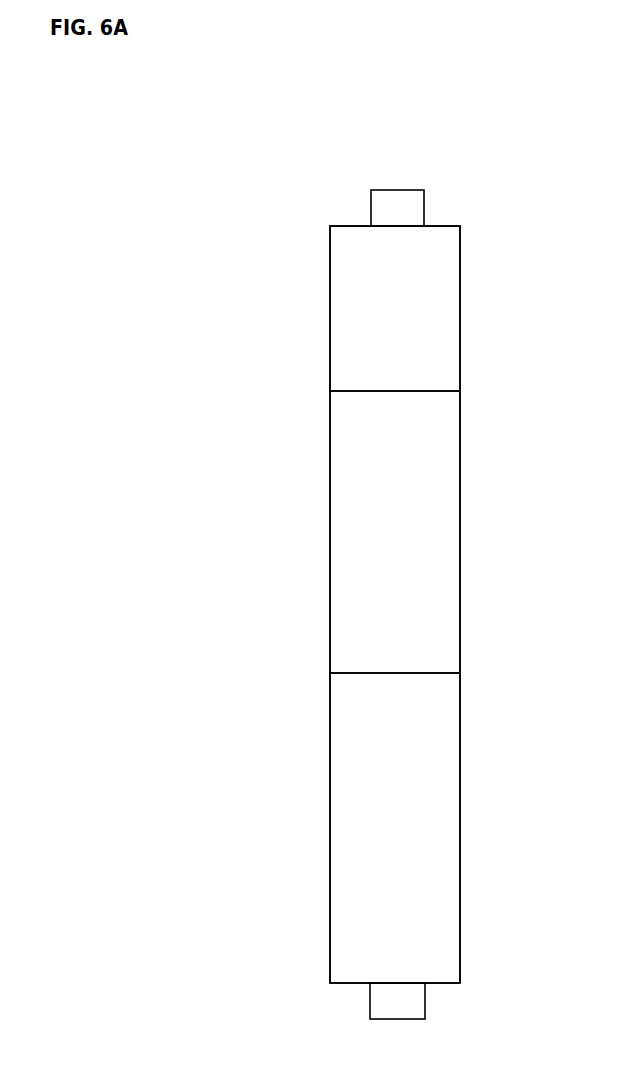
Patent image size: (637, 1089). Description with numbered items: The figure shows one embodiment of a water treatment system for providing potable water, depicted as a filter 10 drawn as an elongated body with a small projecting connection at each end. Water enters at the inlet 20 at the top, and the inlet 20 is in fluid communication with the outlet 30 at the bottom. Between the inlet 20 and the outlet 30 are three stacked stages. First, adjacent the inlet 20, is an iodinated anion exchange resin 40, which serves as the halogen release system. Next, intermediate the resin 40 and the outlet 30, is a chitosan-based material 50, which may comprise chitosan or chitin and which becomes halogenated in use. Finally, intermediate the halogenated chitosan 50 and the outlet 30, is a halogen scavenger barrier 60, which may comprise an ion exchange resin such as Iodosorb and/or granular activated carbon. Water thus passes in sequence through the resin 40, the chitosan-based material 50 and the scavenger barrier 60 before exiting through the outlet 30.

The filter 10 is at (350, 150).
The inlet 20 is at (424, 208).
The outlet 30 is at (425, 1002).
The iodinated anion exchange resin 40 is at (460, 320).
The chitosan-based material 50 is at (460, 525).
The halogen scavenger barrier 60 is at (460, 772).